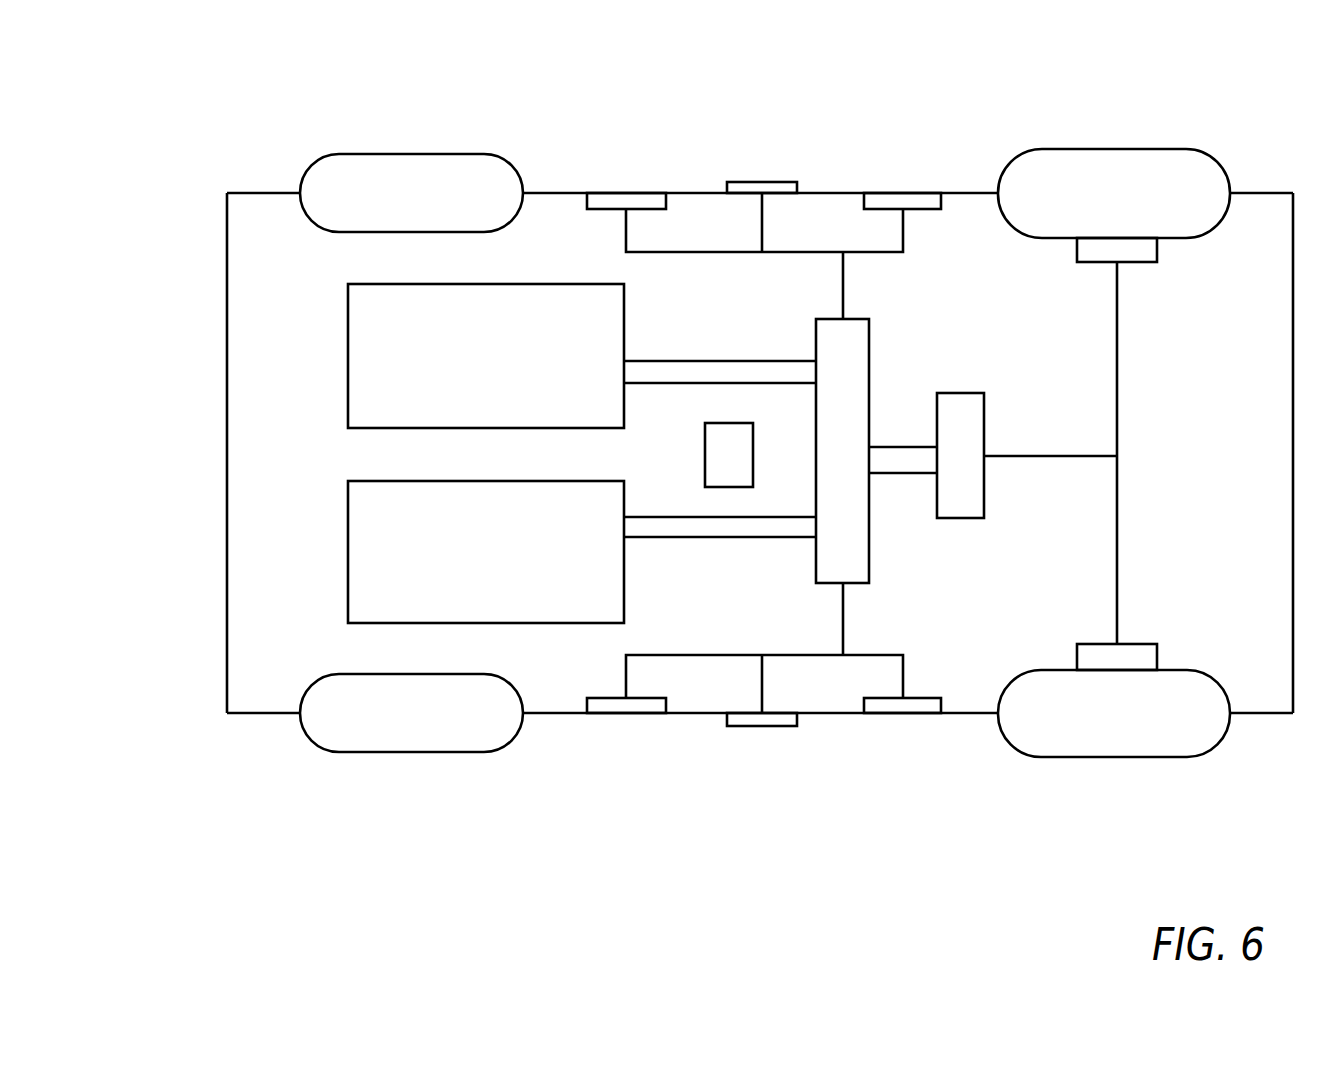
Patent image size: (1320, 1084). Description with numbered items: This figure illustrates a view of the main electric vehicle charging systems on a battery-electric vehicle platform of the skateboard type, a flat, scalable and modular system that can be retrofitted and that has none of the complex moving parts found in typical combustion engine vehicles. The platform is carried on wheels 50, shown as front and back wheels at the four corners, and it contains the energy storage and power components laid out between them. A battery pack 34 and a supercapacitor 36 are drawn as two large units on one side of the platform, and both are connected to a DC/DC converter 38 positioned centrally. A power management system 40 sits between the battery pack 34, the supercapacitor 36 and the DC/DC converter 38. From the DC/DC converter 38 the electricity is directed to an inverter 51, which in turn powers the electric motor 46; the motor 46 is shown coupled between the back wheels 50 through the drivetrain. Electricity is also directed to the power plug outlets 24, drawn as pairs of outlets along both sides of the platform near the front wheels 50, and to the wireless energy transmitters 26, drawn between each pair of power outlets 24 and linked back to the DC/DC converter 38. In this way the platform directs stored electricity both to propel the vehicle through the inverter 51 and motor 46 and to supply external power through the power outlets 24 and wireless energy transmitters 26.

The power outlets 24 is at (621, 200).
The wireless energy transmitter 26 is at (768, 188).
The battery pack 34 is at (367, 385).
The supercapacitor 36 is at (359, 563).
The DC/DC converter 38 is at (857, 537).
The power management system 40 is at (710, 474).
The motor 46 is at (1142, 255).
The wheels 50 is at (337, 187).
The inverter 51 is at (957, 405).